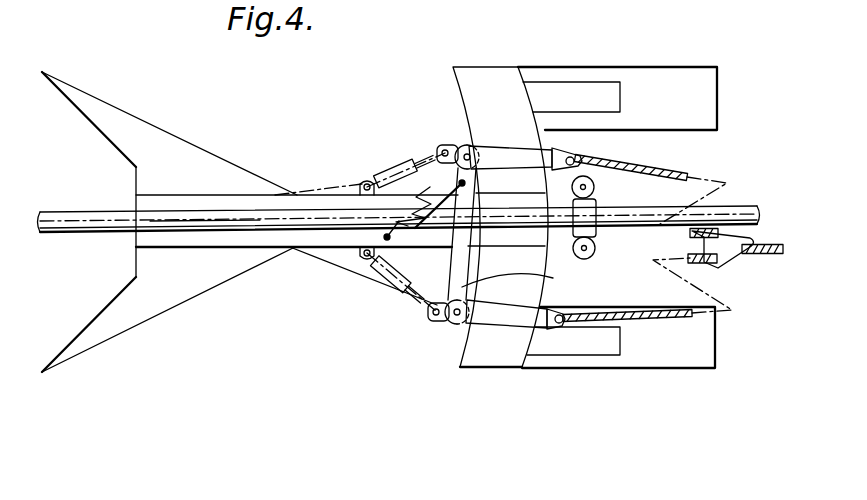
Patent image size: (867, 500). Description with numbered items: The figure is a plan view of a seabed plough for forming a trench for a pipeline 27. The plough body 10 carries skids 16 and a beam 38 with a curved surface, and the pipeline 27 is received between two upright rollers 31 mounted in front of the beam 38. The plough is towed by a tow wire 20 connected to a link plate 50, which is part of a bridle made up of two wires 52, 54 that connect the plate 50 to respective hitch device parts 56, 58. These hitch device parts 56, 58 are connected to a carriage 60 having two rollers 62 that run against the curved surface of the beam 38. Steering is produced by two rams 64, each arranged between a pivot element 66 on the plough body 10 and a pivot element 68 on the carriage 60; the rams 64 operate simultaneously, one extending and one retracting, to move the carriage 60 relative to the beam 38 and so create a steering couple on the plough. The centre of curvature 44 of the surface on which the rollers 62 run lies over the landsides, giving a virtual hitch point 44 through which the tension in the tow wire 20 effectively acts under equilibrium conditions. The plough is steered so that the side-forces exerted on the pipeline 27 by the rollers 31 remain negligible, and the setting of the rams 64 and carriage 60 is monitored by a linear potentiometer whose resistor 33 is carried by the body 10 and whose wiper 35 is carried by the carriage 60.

The plough body 10 is at (285, 250).
The skids 16 is at (693, 56).
The tow wire 20 is at (760, 255).
The pipeline 27 is at (737, 205).
The upright rollers 31 is at (595, 183).
The resistor 33 is at (408, 212).
The wiper 35 is at (420, 230).
The beam 38 is at (493, 80).
The centre of curvature 44 is at (182, 222).
The link plate 50 is at (727, 268).
The bridle wire 52 is at (608, 321).
The bridle wire 54 is at (677, 173).
The hitch device part 56 is at (557, 330).
The hitch device part 58 is at (572, 156).
The carriage 60 is at (524, 288).
The rollers 62 is at (471, 147).
The rams 64 is at (386, 165).
The pivot element 66 is at (362, 181).
The pivot element 68 is at (443, 146).